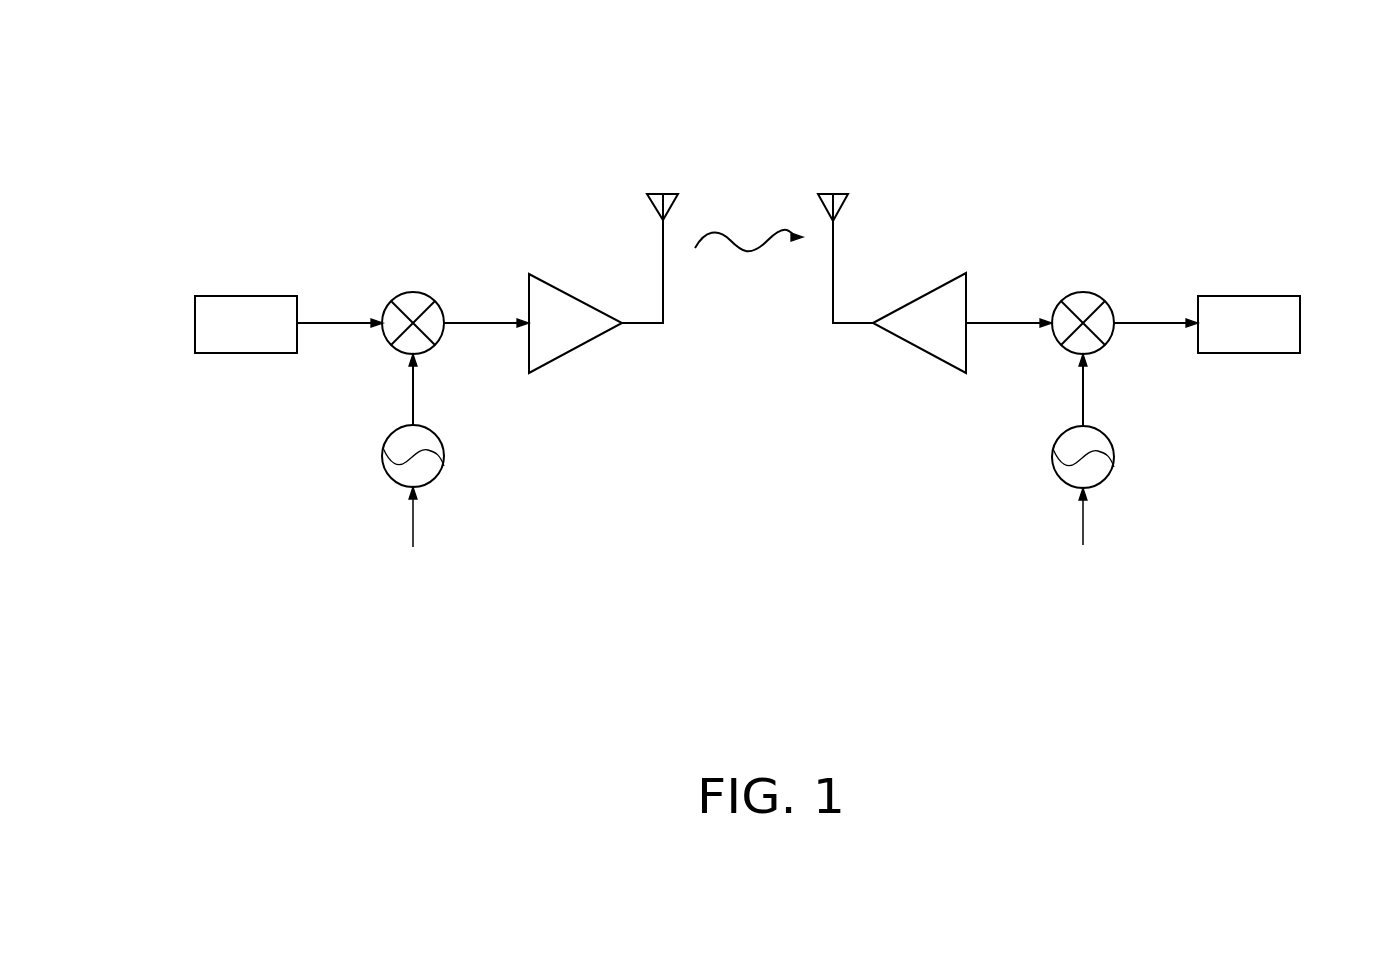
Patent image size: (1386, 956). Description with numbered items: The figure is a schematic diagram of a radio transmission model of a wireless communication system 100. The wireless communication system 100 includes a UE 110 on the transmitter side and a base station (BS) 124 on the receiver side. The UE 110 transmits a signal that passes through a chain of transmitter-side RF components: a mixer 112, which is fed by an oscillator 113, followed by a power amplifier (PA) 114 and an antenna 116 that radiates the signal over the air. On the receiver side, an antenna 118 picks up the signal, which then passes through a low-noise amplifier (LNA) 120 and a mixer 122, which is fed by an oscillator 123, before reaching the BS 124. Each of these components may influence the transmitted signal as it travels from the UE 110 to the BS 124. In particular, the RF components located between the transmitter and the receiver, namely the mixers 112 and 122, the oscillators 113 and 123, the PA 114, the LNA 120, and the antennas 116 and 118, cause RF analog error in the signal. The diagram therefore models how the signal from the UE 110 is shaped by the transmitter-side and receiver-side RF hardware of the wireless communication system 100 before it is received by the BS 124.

The wireless communication system 100 is at (1165, 82).
The UE 110 is at (225, 293).
The mixer 112 is at (407, 290).
The oscillator 113 is at (442, 445).
The power amplifier 114 is at (555, 283).
The antenna 116 is at (670, 192).
The antenna 118 is at (828, 192).
The low-noise amplifier 120 is at (950, 280).
The mixer 122 is at (1083, 290).
The oscillator 123 is at (1112, 442).
The base station 124 is at (1233, 295).